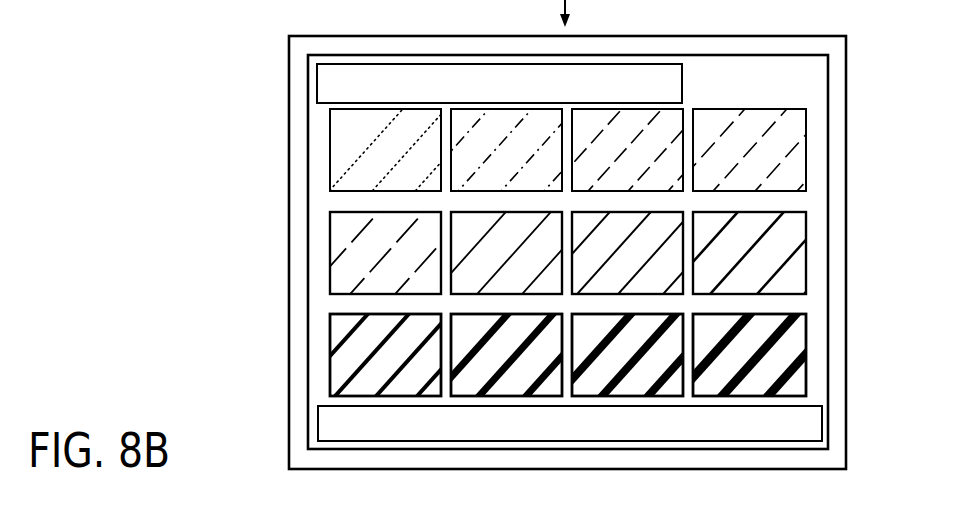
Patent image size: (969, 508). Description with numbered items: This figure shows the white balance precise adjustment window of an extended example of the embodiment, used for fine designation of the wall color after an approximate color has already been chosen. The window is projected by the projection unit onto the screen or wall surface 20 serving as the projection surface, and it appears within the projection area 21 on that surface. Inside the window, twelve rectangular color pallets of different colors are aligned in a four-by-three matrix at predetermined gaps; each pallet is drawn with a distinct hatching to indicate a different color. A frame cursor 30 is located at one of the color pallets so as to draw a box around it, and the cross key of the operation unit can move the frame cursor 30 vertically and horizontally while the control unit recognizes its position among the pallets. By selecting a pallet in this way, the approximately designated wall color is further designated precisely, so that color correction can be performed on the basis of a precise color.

The screen or wall surface 20 is at (847, 114).
The projection area 21 is at (828, 263).
The frame cursor 30 is at (333, 344).